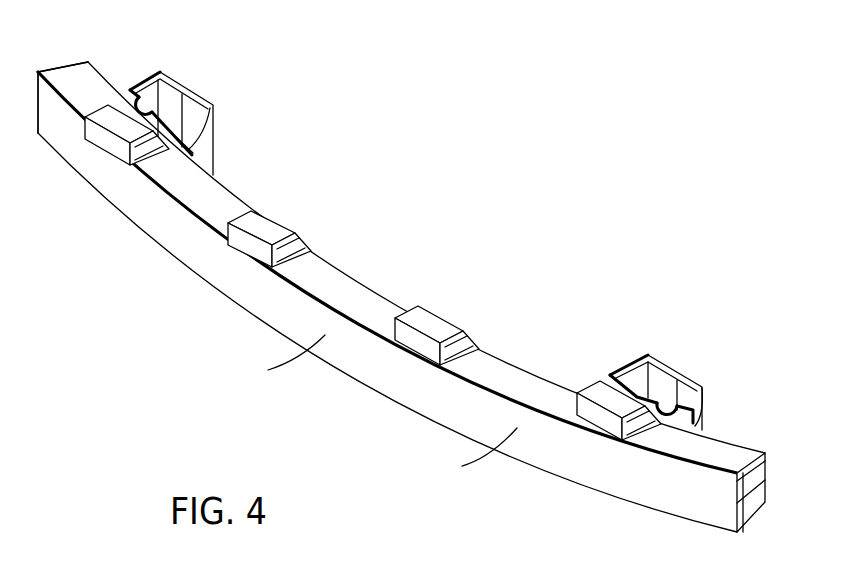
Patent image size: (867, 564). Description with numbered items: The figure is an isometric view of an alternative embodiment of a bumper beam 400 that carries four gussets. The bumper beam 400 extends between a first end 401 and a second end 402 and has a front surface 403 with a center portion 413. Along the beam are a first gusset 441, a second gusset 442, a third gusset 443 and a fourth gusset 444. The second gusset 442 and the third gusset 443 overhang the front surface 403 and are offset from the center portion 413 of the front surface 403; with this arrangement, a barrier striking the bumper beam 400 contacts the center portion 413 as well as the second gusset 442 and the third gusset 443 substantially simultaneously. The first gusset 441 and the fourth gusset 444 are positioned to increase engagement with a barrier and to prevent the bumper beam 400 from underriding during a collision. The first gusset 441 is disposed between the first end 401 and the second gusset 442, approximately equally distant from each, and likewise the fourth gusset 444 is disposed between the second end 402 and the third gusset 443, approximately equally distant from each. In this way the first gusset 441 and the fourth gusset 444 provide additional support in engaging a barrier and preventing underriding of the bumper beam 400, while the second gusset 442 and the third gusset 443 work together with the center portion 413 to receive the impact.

The bumper beam 400 is at (597, 210).
The first end 401 is at (68, 67).
The second end 402 is at (767, 463).
The front surface 403 is at (468, 457).
The center portion 413 is at (277, 362).
The first gusset 441 is at (100, 100).
The second gusset 442 is at (278, 210).
The third gusset 443 is at (452, 310).
The fourth gusset 444 is at (588, 377).